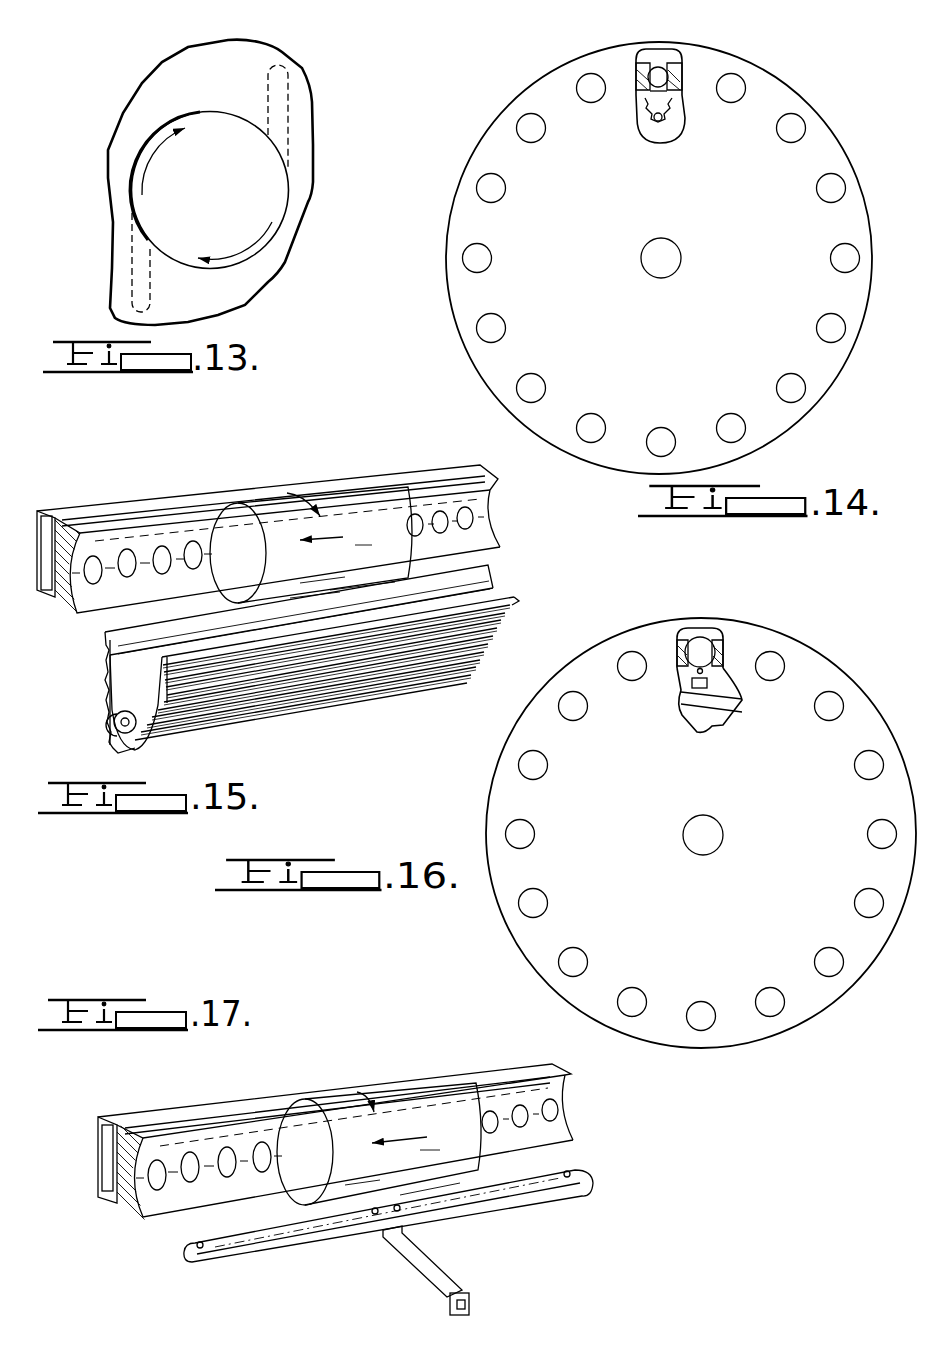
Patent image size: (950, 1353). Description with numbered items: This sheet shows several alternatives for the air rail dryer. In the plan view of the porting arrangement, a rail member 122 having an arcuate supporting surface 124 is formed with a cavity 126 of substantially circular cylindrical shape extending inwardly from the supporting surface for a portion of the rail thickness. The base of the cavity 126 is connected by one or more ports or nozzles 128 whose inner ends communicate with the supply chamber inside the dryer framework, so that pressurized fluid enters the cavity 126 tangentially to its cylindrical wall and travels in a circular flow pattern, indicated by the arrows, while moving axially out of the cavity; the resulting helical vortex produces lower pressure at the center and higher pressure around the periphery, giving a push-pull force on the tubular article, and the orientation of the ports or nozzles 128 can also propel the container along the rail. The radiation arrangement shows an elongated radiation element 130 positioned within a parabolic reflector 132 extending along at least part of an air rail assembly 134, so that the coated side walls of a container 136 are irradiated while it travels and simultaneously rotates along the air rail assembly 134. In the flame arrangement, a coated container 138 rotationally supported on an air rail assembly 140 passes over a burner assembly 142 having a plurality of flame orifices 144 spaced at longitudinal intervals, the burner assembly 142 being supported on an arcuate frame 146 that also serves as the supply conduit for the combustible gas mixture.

In FIG. 13, the rail member 122 is at (316, 121).
In FIG. 13, the arcuate supporting surface 124 is at (245, 57).
In FIG. 13, the cavity 126 is at (287, 200).
In FIG. 13, the ports or nozzles 128 is at (303, 82).
In FIG. 14, the radiation element 130 is at (650, 122).
In FIG. 15, the radiation element 130 is at (125, 710).
In FIG. 14, the parabolic reflector 132 is at (674, 124).
In FIG. 15, the parabolic reflector 132 is at (423, 680).
In FIG. 14, the air rail assembly 134 is at (690, 66).
In FIG. 15, the air rail assembly 134 is at (495, 523).
In FIG. 15, the container 136 is at (340, 497).
In FIG. 17, the coated container 138 is at (407, 1098).
In FIG. 16, the air rail assembly 140 is at (727, 644).
In FIG. 17, the air rail assembly 140 is at (569, 1124).
In FIG. 16, the burner assembly 142 is at (745, 696).
In FIG. 17, the burner assembly 142 is at (275, 1250).
In FIG. 16, the flame orifices 144 is at (692, 682).
In FIG. 17, the flame orifices 144 is at (187, 1252).
In FIG. 16, the arcuate frame 146 is at (700, 712).
In FIG. 17, the arcuate frame 146 is at (450, 1280).